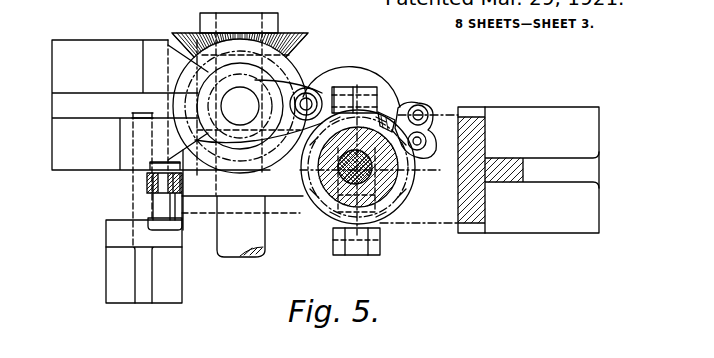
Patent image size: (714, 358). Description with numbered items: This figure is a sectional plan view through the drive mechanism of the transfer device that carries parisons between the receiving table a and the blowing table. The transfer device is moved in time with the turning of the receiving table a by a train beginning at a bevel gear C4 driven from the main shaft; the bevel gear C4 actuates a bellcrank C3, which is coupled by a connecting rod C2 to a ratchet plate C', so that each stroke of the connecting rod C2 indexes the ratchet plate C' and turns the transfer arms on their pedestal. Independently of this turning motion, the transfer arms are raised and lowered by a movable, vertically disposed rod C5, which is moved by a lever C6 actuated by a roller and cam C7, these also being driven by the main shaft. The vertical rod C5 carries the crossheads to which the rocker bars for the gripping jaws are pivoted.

The receiving table a is at (273, 87).
The bevel gear C4 is at (300, 37).
The bellcrank C3 is at (305, 88).
The connecting rod C2 is at (350, 77).
The vertical rod C5 is at (396, 172).
The ratchet plate C' is at (370, 175).
The lever C6 is at (291, 210).
The roller and cam C7 is at (207, 187).